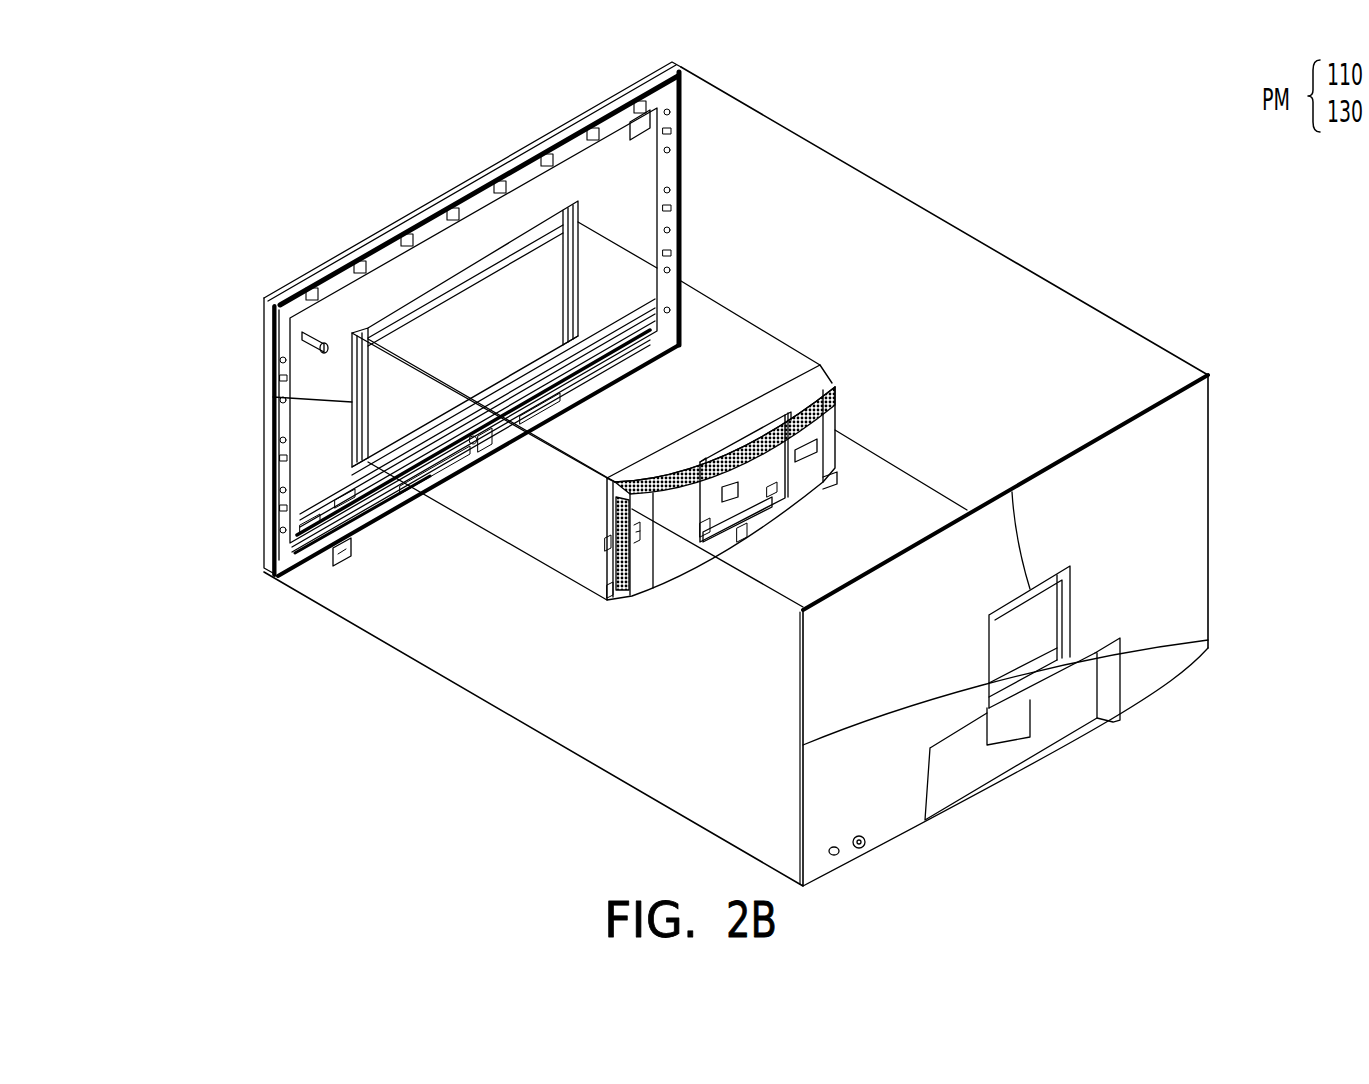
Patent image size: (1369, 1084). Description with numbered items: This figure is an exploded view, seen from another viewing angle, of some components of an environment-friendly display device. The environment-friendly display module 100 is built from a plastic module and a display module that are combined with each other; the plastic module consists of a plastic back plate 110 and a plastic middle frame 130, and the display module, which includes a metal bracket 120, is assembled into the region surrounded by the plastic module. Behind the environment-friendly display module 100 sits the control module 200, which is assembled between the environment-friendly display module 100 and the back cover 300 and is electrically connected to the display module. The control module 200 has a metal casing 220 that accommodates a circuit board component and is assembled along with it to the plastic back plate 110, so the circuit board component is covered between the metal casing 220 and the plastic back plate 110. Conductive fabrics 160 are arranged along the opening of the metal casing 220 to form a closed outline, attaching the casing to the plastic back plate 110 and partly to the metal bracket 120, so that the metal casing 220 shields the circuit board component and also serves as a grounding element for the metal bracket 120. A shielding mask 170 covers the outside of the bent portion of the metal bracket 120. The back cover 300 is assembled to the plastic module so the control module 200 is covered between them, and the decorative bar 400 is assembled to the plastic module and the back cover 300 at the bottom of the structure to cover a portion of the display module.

The environment-friendly display module 100 is at (172, 348).
The plastic back plate 110 is at (608, 180).
The metal bracket 120 is at (338, 478).
The plastic middle frame 130 is at (463, 185).
The conductive fabrics 160 is at (425, 205).
The shielding mask 170 is at (480, 447).
The control module 200 is at (855, 413).
The metal casing 220 is at (798, 503).
The back cover 300 is at (1188, 530).
The decorative bar 400 is at (341, 556).